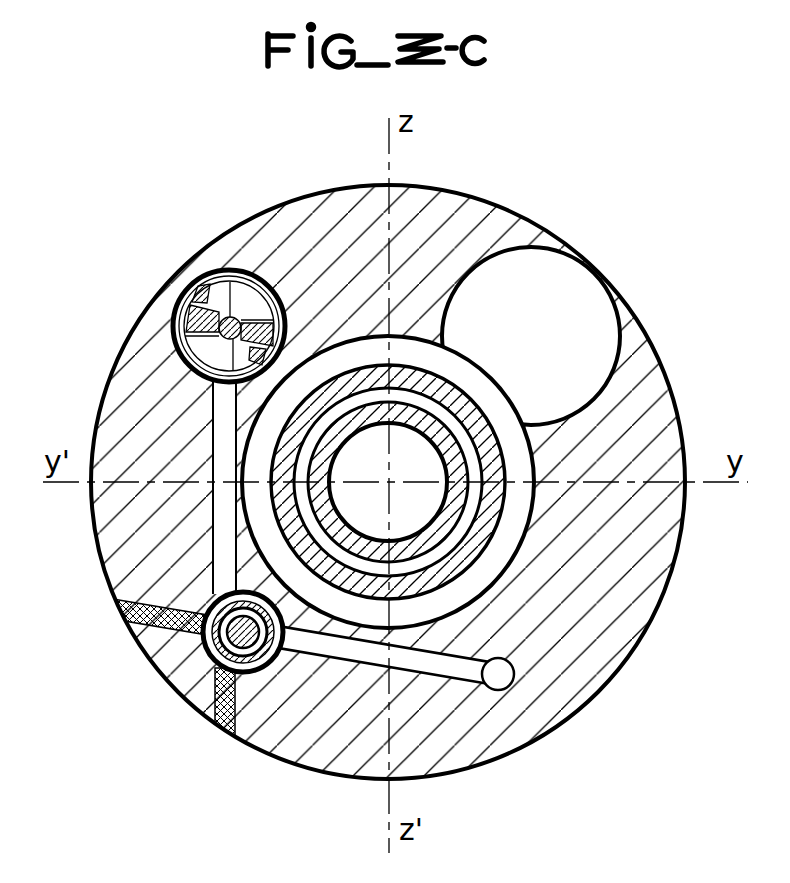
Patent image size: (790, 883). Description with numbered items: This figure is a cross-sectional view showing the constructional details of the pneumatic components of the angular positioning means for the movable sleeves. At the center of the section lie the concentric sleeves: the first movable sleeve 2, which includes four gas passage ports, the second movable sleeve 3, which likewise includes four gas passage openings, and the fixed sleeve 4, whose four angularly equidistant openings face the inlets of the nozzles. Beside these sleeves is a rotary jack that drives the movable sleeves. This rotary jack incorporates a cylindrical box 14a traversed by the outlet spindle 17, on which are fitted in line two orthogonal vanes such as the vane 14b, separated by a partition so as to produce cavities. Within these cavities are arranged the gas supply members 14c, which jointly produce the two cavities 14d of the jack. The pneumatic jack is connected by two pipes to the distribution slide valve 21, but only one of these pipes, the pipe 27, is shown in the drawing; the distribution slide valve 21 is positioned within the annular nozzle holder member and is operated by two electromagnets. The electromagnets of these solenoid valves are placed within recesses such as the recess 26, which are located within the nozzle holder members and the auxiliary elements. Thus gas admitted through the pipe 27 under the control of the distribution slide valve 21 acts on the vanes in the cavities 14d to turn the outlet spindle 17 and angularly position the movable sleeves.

The first movable sleeve 2 is at (283, 430).
The second movable sleeve 3 is at (280, 512).
The fixed sleeve 4 is at (320, 470).
The cylindrical box 14a is at (192, 284).
The vane 14b is at (248, 298).
The gas supply member 14c is at (175, 306).
The cavity 14d is at (247, 272).
The outlet spindle 17 is at (224, 325).
The distribution slide valve 21 is at (260, 665).
The recess 26 is at (583, 297).
The pipe 27 is at (213, 530).